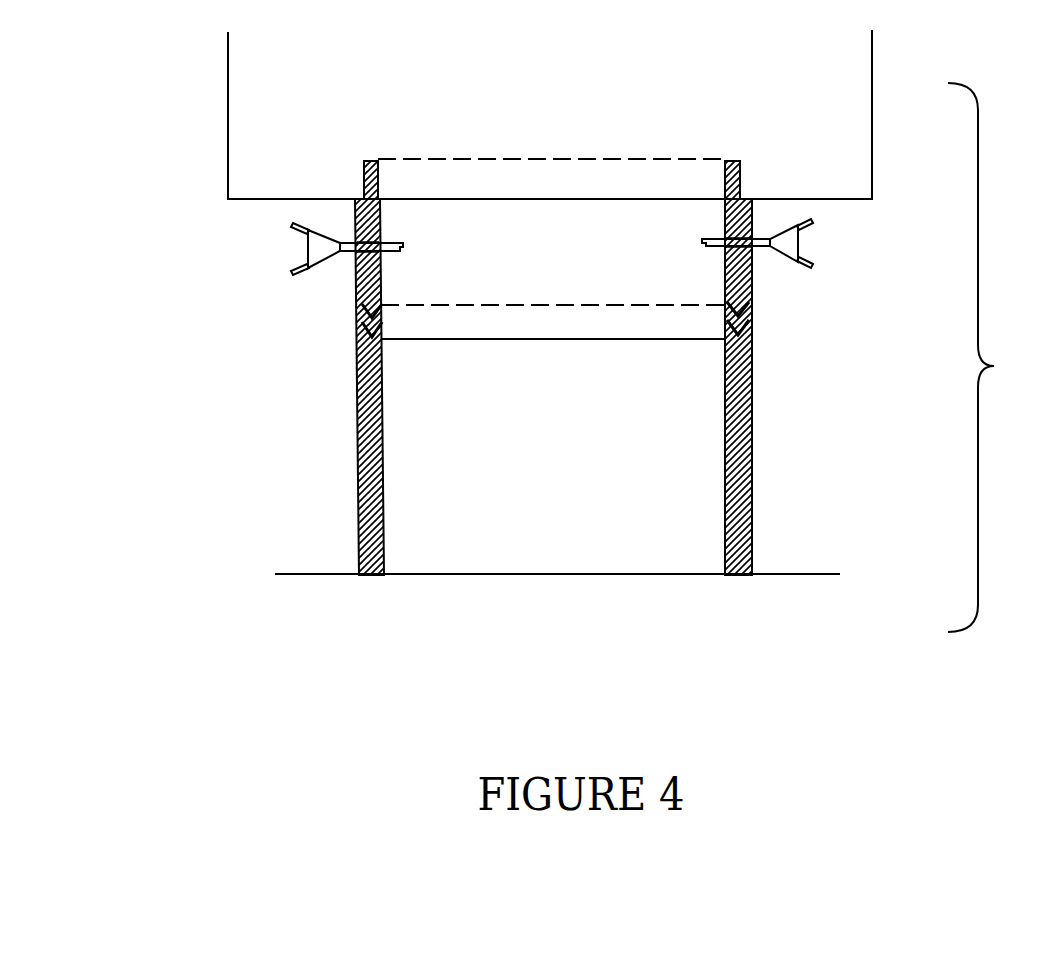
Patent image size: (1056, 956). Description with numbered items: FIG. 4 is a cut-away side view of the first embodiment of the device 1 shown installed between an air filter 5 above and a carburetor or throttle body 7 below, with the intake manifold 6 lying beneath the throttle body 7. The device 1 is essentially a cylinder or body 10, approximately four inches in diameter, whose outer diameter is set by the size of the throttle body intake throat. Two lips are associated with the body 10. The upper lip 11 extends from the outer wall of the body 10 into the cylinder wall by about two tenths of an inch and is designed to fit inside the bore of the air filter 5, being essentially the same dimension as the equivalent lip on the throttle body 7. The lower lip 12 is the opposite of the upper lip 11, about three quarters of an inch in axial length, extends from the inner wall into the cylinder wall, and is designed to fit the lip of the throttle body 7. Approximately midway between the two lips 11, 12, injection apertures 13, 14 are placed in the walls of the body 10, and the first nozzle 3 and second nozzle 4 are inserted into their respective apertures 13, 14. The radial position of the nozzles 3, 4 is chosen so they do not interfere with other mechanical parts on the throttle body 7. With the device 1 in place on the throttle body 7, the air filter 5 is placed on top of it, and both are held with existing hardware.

The first embodiment 1 is at (546, 243).
The first nozzle 3 is at (803, 245).
The second nozzle 4 is at (305, 240).
The air filter 5 is at (539, 89).
The intake manifold 6 is at (548, 631).
The carburetor or throttle body 7 is at (550, 465).
The body 10 is at (752, 345).
The upper lip 11 is at (363, 177).
The lower lip 12 is at (363, 343).
The injection nozzle 13 is at (752, 250).
The injection nozzle 14 is at (357, 270).